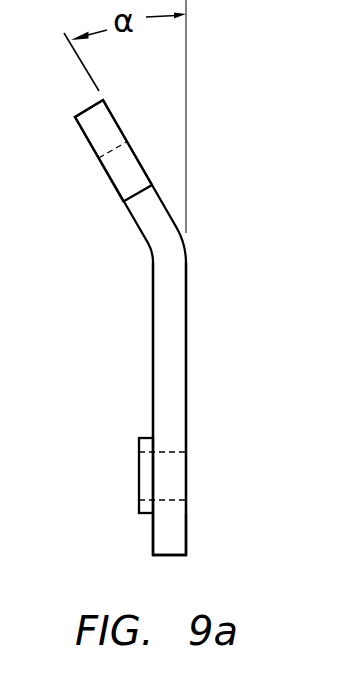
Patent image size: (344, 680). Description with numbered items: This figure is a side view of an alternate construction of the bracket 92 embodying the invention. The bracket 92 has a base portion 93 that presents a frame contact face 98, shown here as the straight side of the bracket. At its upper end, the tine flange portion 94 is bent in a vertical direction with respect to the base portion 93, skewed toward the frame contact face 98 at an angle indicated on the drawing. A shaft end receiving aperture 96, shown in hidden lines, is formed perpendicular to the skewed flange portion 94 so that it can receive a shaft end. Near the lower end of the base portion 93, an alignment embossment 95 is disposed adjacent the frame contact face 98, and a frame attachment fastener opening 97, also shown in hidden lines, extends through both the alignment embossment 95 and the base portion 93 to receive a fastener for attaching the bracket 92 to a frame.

The bracket 92 is at (187, 388).
The base portion 93 is at (160, 530).
The flange portion 94 is at (100, 120).
The alignment embossment 95 is at (147, 490).
The shaft end receiving aperture 96 is at (113, 153).
The frame attachment fastener opening 97 is at (172, 452).
The frame contact face 98 is at (153, 389).